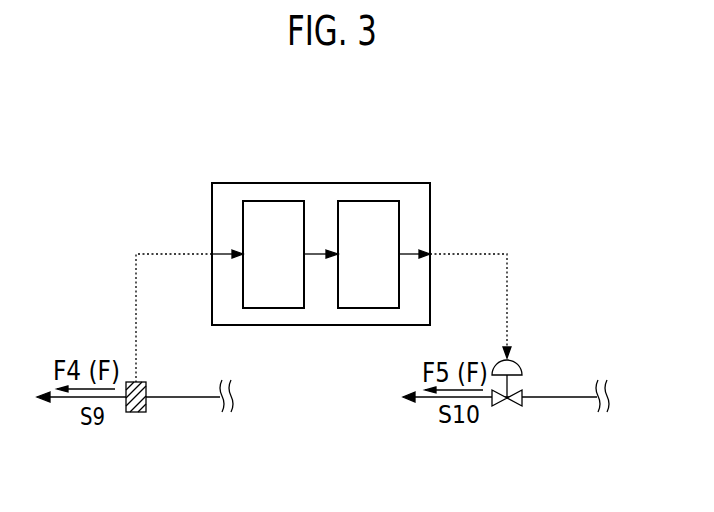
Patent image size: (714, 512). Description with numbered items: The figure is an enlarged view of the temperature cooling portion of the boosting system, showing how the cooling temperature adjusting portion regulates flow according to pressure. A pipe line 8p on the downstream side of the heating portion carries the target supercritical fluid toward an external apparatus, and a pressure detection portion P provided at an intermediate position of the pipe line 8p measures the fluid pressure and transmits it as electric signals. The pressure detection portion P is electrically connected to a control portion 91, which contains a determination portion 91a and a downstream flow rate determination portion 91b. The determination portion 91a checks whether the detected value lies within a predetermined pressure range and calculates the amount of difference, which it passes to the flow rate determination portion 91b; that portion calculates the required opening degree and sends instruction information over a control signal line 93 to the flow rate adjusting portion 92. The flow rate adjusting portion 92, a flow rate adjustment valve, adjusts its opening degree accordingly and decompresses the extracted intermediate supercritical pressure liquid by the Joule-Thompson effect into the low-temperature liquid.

The control portion 91 is at (321, 247).
The determination portion 91a is at (273, 308).
The flow rate determination portion 91b is at (366, 308).
The control signal line 93 is at (136, 283).
The pipe line 8p is at (183, 397).
The pressure detection portion P is at (134, 413).
The flow rate adjusting portion 92 is at (512, 407).